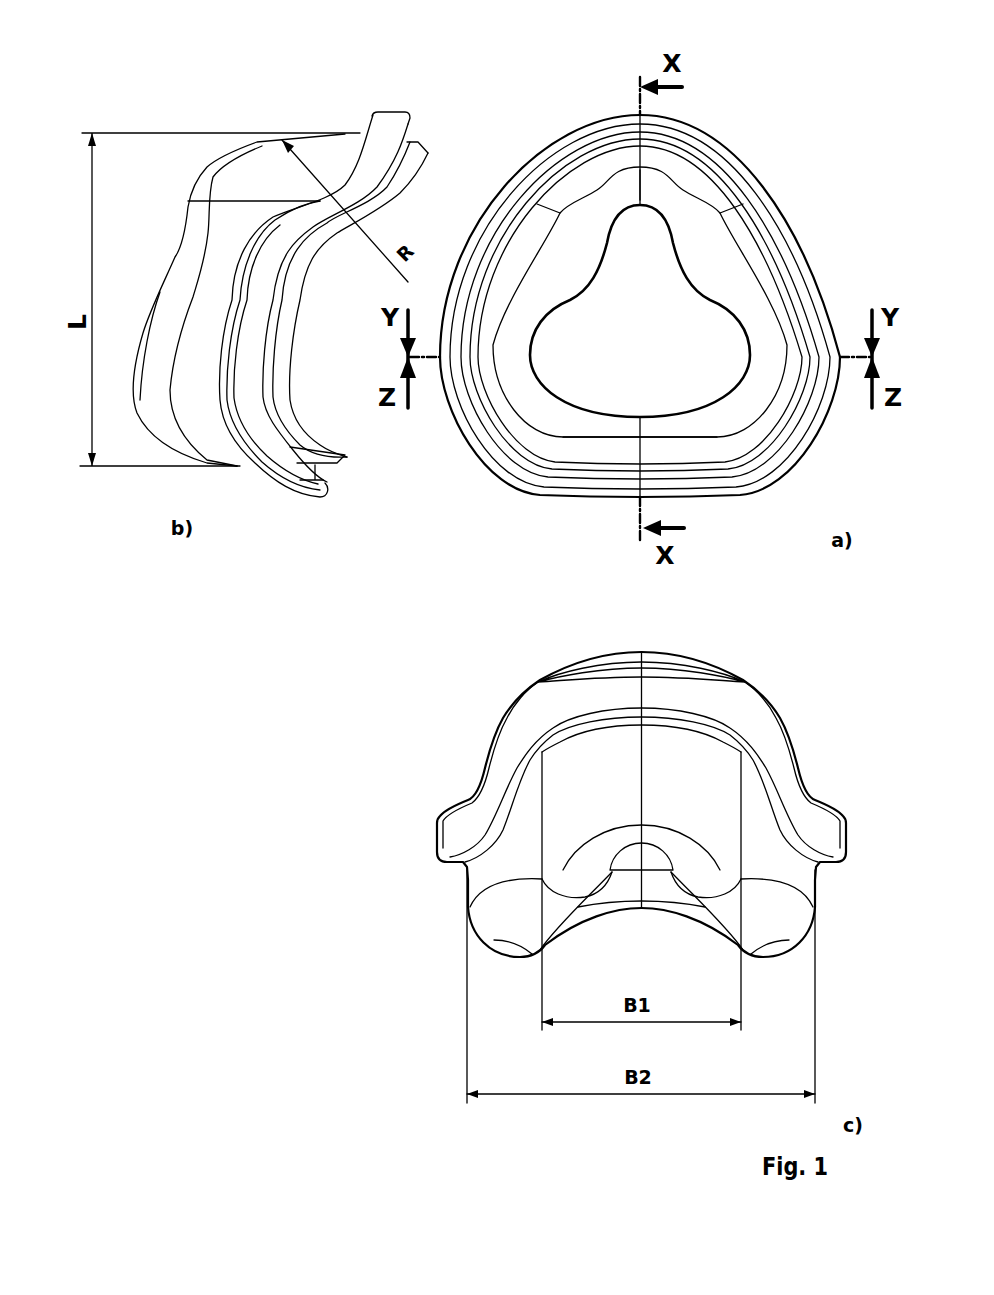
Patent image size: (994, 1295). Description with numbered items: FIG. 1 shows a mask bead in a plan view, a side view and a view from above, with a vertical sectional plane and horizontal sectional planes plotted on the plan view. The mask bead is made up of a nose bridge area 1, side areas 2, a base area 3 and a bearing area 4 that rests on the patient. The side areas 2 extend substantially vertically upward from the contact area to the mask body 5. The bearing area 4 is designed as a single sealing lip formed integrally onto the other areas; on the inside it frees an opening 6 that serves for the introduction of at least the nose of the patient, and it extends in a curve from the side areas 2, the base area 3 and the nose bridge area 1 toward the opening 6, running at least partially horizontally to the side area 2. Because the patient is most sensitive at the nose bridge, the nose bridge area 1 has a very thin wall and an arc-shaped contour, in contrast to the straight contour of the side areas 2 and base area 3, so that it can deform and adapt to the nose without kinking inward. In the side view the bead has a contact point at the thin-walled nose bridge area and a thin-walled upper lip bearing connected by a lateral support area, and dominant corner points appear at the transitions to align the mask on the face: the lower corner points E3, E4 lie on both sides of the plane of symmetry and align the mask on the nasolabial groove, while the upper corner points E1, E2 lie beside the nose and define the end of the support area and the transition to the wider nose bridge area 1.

The nose bridge area 1 is at (668, 167).
The side areas 2 is at (205, 313).
The base area 3 is at (657, 447).
The bearing area 4 is at (718, 278).
The mask body 5 is at (293, 483).
The opening 6 is at (635, 305).
The upper corner point E1 is at (605, 203).
The upper corner point E2 is at (682, 207).
The lower corner point E3 is at (743, 388).
The lower corner point E4 is at (540, 400).